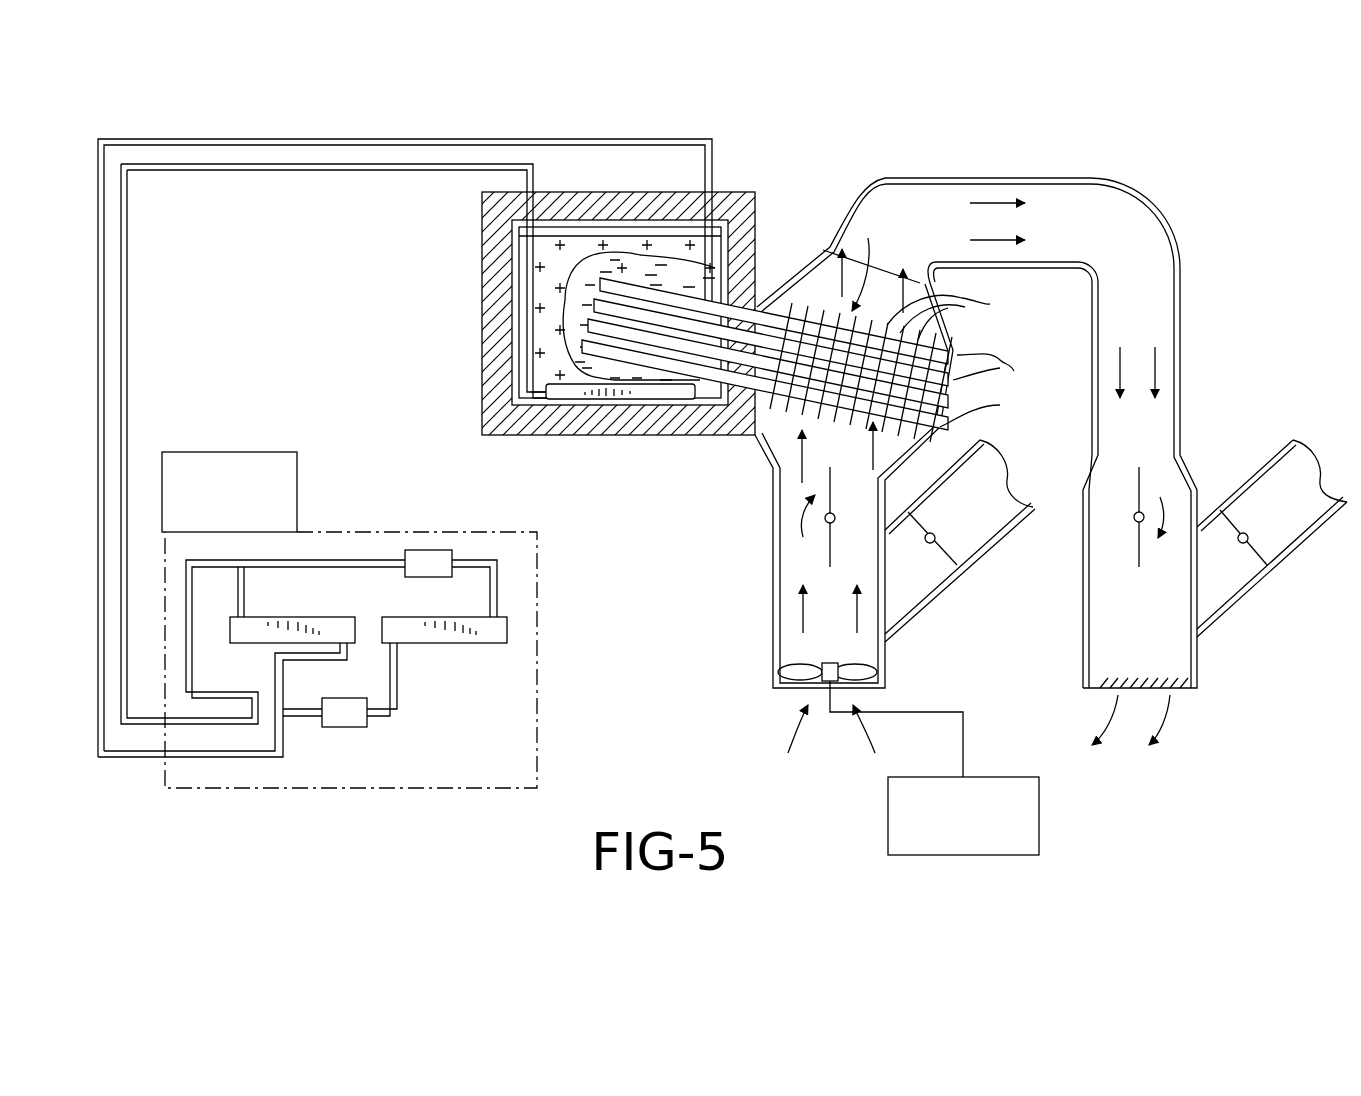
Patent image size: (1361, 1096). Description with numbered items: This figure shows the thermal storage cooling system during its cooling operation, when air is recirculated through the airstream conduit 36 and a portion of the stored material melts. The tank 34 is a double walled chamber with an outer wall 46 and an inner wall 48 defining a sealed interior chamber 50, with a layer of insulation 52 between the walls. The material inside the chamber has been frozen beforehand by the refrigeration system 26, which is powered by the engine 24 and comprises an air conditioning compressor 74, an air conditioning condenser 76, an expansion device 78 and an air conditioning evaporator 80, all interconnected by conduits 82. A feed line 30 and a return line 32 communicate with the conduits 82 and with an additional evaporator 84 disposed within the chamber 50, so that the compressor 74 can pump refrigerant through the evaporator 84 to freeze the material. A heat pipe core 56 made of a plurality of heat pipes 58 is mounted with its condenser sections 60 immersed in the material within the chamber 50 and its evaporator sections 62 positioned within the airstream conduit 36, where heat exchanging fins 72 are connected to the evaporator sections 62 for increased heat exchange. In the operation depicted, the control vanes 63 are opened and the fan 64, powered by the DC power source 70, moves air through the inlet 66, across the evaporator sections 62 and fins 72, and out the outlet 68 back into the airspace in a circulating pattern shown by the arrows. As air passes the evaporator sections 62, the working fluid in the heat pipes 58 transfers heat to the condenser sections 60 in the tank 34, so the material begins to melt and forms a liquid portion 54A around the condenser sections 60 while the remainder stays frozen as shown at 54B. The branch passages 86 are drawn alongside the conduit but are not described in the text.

The engine 24 is at (190, 452).
The refrigeration system 26 is at (540, 690).
The feed line 30 is at (230, 138).
The return line 32 is at (127, 270).
The tank 34 is at (480, 207).
The airstream conduit 36 is at (965, 178).
The outer wall 46 is at (498, 262).
The inner wall 48 is at (505, 228).
The interior chamber 50 is at (625, 230).
The layer of insulation 52 is at (496, 296).
The liquid portion of material 54A is at (622, 268).
The frozen portion of material 54B is at (572, 255).
The heat pipe core 56 is at (861, 327).
The heat pipes 58 is at (994, 390).
The condenser sections 60 is at (666, 289).
The evaporator sections 62 is at (878, 440).
The control vanes 63 is at (830, 550).
The fan 64 is at (800, 670).
The inlet 66 is at (790, 690).
The outlet 68 is at (1098, 690).
The DC power source 70 is at (888, 800).
The heat exchanging fins 72 is at (955, 315).
The air conditioning compressor 74 is at (420, 577).
The air conditioning condenser 76 is at (495, 643).
The expansion device 78 is at (347, 727).
The air conditioning evaporator 80 is at (263, 636).
The conduits 82 is at (327, 570).
The additional evaporator 84 is at (672, 399).
The branch duct 86 is at (985, 547).